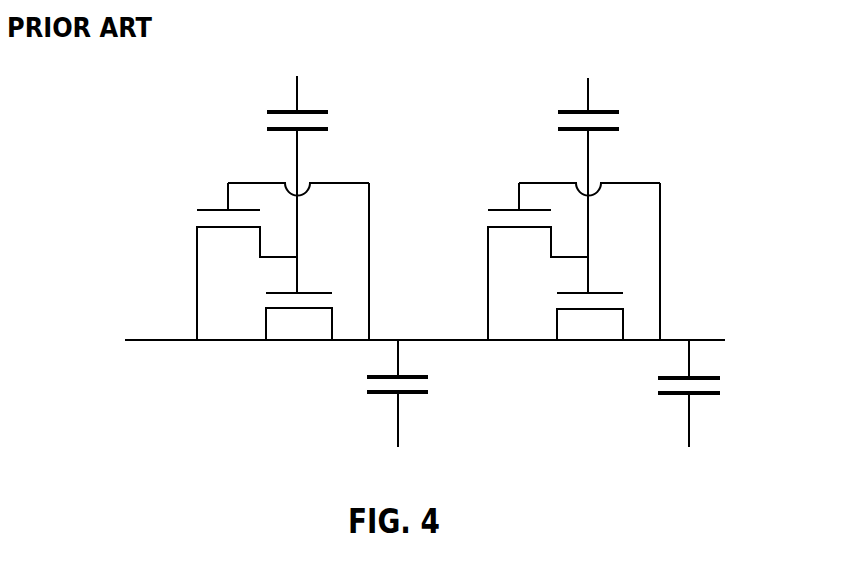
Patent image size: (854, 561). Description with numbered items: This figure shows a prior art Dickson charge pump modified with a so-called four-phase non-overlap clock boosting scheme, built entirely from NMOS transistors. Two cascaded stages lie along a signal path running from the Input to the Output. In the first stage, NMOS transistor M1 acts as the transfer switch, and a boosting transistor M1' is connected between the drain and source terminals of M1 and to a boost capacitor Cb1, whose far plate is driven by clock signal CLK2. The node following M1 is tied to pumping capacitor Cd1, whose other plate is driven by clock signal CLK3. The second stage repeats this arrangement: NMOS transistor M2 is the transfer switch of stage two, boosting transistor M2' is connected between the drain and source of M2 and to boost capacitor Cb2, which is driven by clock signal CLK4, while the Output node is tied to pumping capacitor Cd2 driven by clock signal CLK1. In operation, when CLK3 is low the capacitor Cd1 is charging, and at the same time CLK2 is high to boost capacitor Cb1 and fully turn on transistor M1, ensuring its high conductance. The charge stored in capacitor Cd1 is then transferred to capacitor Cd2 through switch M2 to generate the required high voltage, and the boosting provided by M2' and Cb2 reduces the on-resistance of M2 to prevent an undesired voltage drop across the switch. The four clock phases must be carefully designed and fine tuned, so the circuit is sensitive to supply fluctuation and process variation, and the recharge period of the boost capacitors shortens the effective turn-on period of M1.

The input Input is at (128, 340).
The output Output is at (746, 338).
The NMOS transistor M1 is at (299, 318).
The NMOS transistor M1' is at (247, 261).
The NMOS transistor M2 is at (590, 318).
The NMOS transistor M2' is at (538, 261).
The capacitor Cb1 is at (276, 146).
The capacitor Cb2 is at (610, 147).
The capacitor Cd1 is at (372, 375).
The capacitor Cd2 is at (711, 374).
The clock signal CLK1 is at (719, 425).
The clock signal CLK2 is at (328, 83).
The clock signal CLK3 is at (430, 425).
The clock signal CLK4 is at (621, 84).